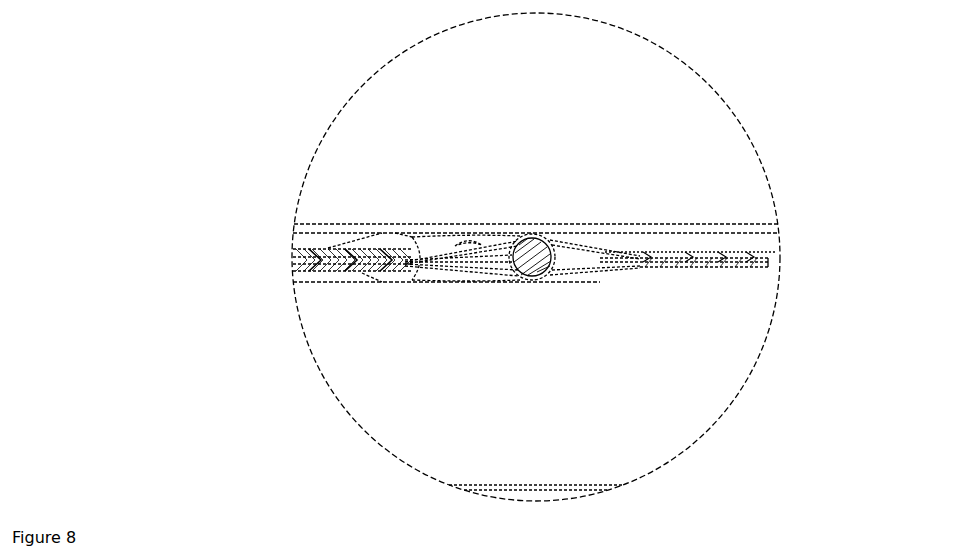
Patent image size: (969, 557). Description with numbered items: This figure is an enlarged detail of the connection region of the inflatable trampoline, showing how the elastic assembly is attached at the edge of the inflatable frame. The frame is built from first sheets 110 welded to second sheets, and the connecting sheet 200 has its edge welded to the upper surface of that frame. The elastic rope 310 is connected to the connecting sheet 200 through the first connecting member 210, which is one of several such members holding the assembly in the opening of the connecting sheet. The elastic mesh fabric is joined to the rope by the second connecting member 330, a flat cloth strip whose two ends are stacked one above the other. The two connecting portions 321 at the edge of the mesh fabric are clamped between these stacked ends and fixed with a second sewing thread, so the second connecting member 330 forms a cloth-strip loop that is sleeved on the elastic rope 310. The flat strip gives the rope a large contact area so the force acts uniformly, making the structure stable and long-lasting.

The first sheet 110 is at (437, 408).
The connecting sheet 200 is at (692, 258).
The first connecting member 210 is at (563, 242).
The elastic rope 310 is at (525, 236).
The connecting portion 321 is at (330, 248).
The second connecting member 330 is at (458, 267).